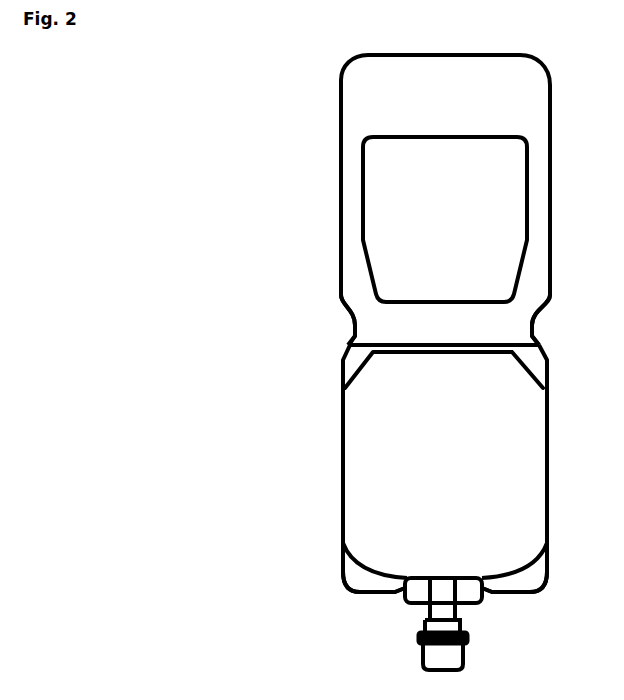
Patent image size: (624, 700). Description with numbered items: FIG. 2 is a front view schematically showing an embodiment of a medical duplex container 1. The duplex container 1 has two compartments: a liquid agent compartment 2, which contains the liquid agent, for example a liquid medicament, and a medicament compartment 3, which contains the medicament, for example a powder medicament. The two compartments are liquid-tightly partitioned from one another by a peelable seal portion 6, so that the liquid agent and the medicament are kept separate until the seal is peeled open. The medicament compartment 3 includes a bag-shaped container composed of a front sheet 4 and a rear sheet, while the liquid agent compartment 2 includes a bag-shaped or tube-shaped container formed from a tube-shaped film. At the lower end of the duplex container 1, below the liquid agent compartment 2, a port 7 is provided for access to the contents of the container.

The duplex container 1 is at (245, 292).
The liquid agent compartment 2 is at (352, 452).
The medicament compartment 3 is at (370, 187).
The front sheet 4 is at (336, 242).
The peelable seal portion 6 is at (353, 328).
The port 7 is at (410, 655).